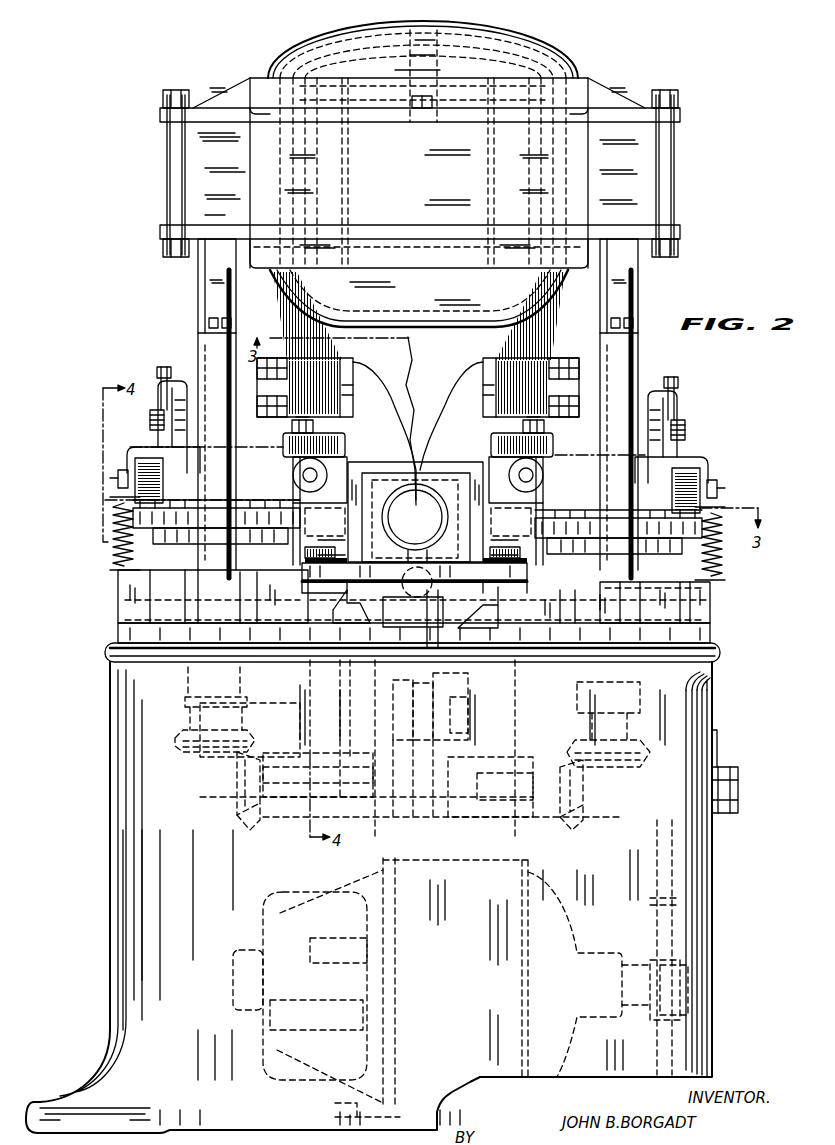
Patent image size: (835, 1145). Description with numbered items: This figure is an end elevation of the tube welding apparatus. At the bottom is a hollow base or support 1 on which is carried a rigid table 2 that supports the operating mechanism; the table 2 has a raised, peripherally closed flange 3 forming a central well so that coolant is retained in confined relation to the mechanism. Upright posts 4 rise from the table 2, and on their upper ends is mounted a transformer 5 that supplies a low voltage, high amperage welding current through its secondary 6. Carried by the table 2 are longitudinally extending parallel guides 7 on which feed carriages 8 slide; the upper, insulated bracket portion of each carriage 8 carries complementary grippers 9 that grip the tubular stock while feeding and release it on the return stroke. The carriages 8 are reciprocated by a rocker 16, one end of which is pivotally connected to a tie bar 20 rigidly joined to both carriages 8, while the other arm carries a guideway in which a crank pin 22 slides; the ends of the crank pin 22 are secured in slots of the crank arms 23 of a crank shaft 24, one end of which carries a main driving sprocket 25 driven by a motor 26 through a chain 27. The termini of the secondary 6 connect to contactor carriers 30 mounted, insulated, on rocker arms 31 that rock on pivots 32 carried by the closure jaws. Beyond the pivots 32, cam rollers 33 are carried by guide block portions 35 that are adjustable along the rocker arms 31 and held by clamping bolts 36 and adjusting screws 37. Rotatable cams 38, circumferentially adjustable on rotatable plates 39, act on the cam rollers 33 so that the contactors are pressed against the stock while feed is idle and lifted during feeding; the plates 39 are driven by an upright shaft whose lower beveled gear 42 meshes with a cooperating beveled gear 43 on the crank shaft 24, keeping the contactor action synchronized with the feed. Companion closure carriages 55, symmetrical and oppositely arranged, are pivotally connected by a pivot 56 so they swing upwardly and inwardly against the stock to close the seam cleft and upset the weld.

The hollow base 1 is at (110, 827).
The table 2 is at (720, 653).
The peripherally closed flange 3 is at (706, 615).
The upright posts 4 is at (213, 352).
The transformer 5 is at (655, 161).
The secondary 6 is at (280, 311).
The guides 7 is at (347, 610).
The feed carriages 8 is at (500, 597).
The grippers 9 is at (415, 512).
The rocker 16 is at (413, 699).
The tie bar 20 is at (450, 699).
The crank pin 22 is at (418, 740).
The crank arms 23 is at (410, 767).
The crank shaft 24 is at (352, 810).
The main driving sprocket 25 is at (655, 830).
The motor 26 is at (480, 863).
The chain 27 is at (656, 917).
The contactor carriers 30 is at (368, 384).
The rocker arms 31 is at (283, 445).
The pivots 32 is at (300, 474).
The cam rollers 33 is at (160, 491).
The guide block portions 35 is at (160, 441).
The clamping bolts 36 is at (155, 416).
The adjusting screws 37 is at (165, 369).
The cams 38 is at (268, 507).
The plates 39 is at (297, 540).
The beveled gear 42 is at (190, 757).
The beveled gear 43 is at (238, 801).
The closure carriages 55 is at (520, 552).
The pivot 56 is at (415, 600).